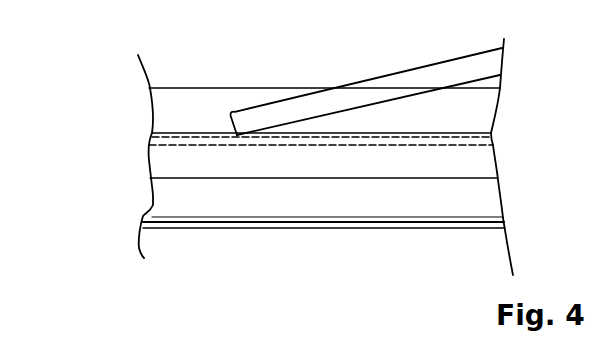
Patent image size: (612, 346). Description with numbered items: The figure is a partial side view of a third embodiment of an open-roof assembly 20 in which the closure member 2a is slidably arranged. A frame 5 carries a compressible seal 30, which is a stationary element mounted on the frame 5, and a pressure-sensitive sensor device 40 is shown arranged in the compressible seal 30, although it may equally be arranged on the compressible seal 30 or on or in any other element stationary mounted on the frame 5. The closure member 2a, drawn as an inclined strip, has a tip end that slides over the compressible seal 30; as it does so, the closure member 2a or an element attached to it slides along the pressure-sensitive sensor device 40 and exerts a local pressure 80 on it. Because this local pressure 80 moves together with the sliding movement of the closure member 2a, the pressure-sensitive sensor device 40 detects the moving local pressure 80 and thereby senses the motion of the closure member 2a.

The open-roof assembly 20 is at (118, 90).
The frame 5 is at (181, 124).
The closure member 2a is at (268, 118).
The local pressure 80 is at (222, 158).
The pressure-sensitive sensor device 40 is at (459, 142).
The compressible seal 30 is at (313, 195).